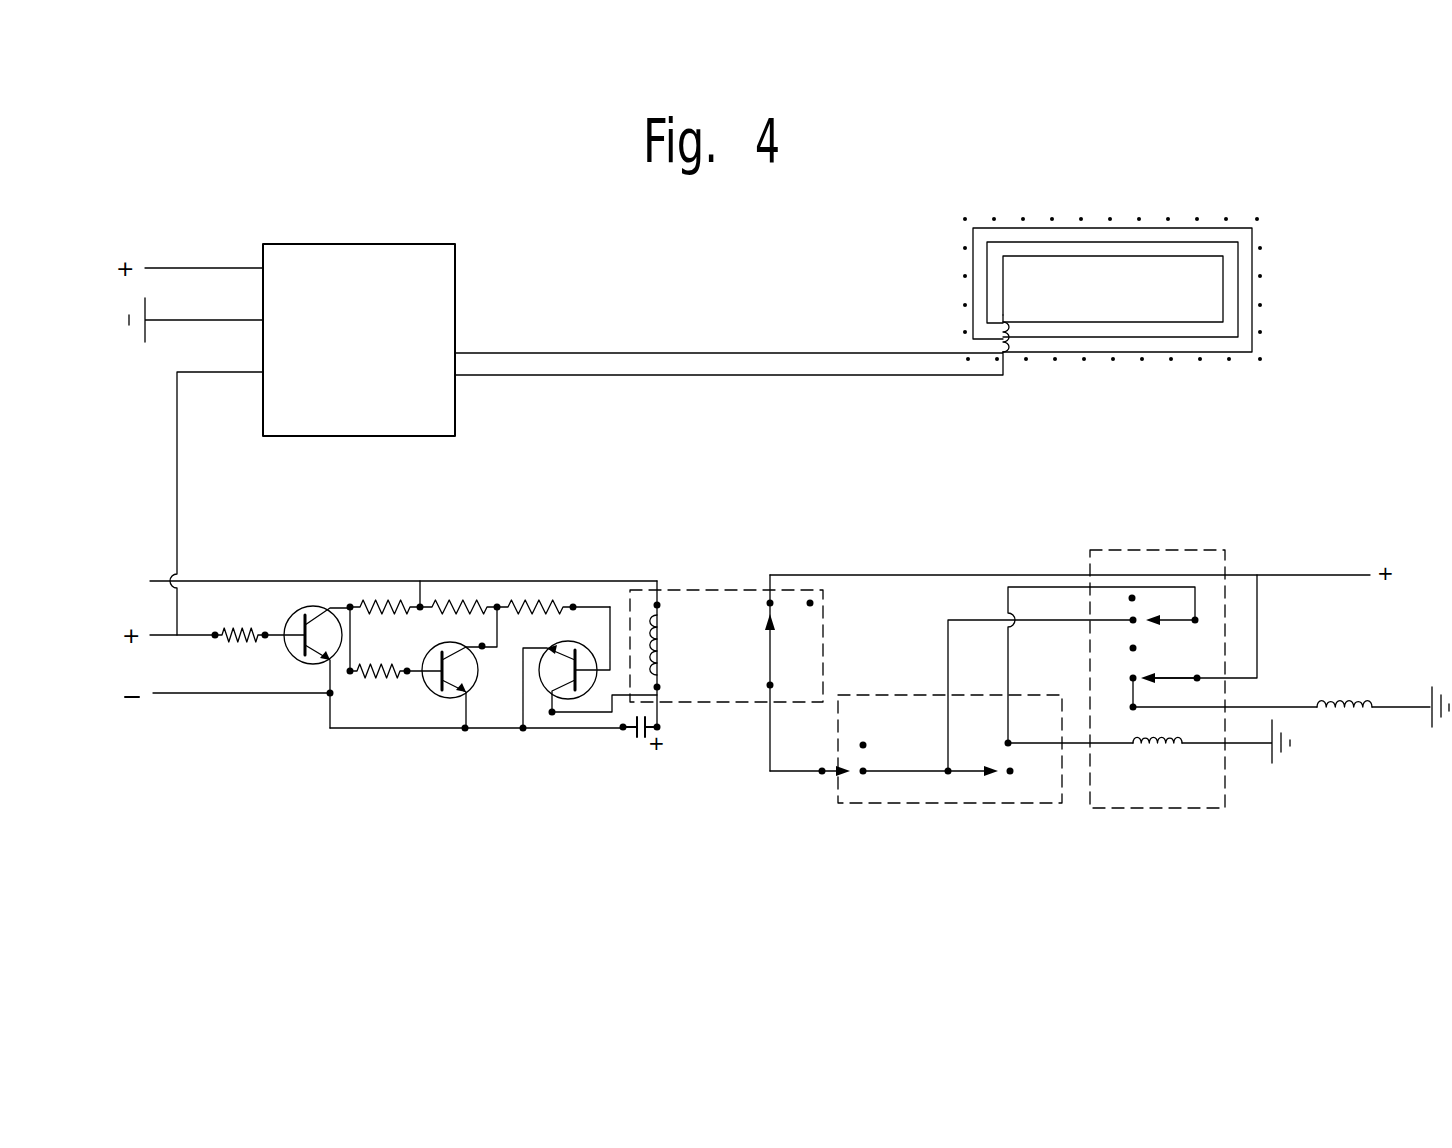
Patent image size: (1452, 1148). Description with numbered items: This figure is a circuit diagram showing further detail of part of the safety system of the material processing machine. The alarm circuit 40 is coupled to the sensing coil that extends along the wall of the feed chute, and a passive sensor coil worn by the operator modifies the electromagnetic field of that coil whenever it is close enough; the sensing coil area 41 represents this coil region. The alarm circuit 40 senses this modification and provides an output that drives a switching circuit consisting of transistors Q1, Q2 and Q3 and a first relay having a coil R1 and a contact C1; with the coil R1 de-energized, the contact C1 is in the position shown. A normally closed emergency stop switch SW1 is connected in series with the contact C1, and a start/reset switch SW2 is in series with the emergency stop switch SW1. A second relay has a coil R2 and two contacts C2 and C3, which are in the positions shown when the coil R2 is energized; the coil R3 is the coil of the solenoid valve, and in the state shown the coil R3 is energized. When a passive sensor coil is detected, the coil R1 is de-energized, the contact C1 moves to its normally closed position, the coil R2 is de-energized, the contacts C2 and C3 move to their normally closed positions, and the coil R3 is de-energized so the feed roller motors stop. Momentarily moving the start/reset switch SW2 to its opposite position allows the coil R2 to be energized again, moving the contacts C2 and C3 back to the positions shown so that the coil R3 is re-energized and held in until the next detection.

The alarm circuit 40 is at (400, 257).
The sensing coil area 41 is at (1230, 230).
The transistor Q1 is at (313, 607).
The transistor Q2 is at (453, 645).
The transistor Q3 is at (583, 650).
The relay coil R1 is at (670, 677).
The relay coil R2 is at (1185, 748).
The solenoid valve coil R3 is at (1348, 705).
The relay contact C1 is at (770, 663).
The relay contact C2 is at (1160, 622).
The relay contact C3 is at (1173, 676).
The emergency stop switch SW1 is at (822, 773).
The start/reset switch SW2 is at (975, 773).